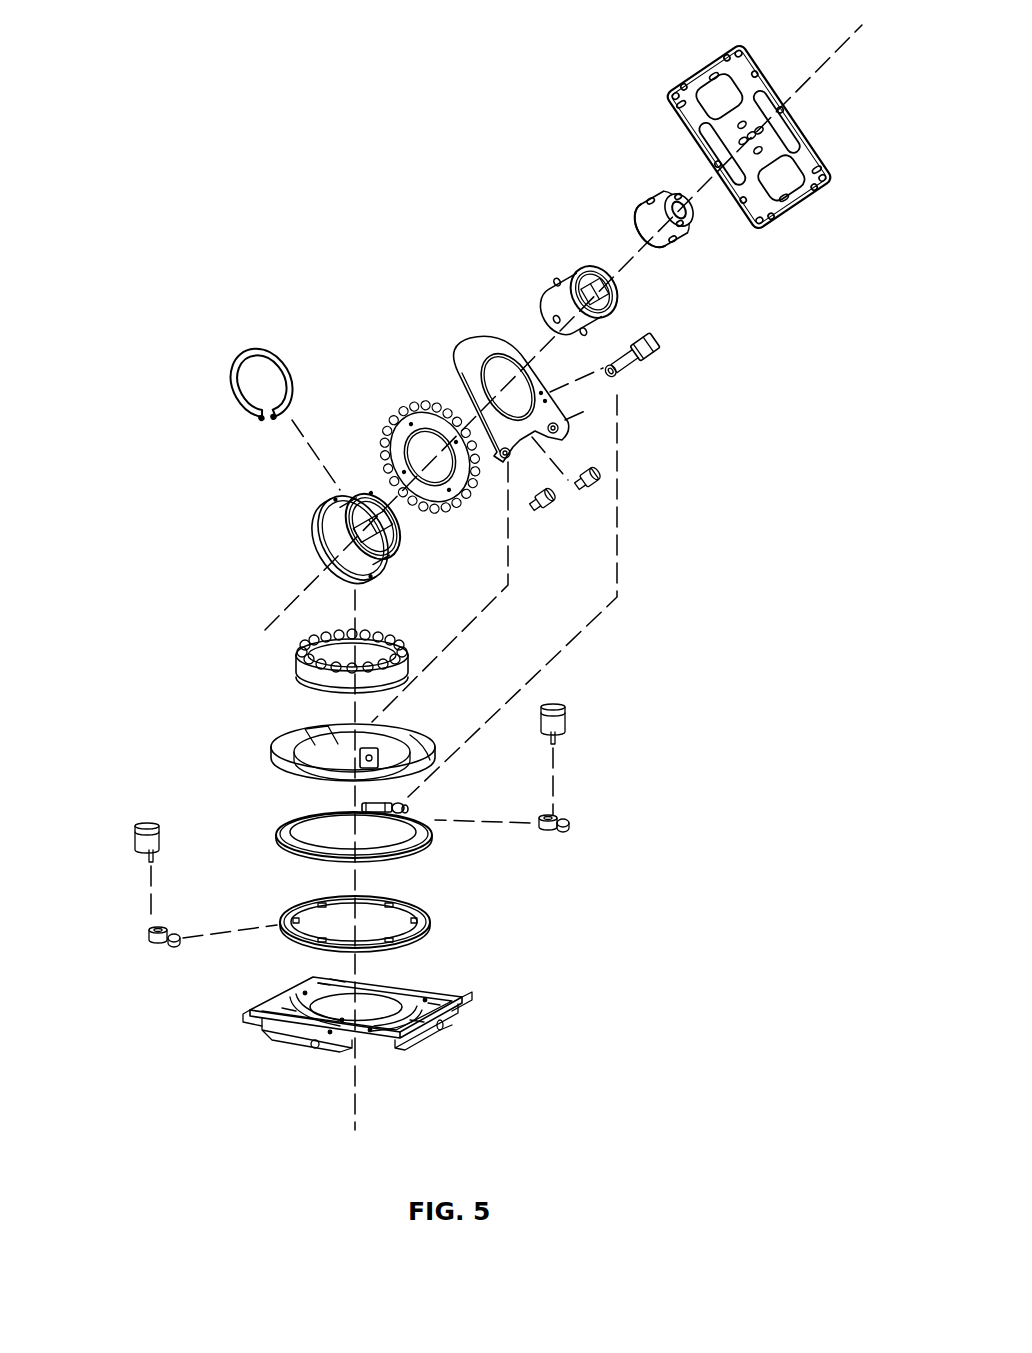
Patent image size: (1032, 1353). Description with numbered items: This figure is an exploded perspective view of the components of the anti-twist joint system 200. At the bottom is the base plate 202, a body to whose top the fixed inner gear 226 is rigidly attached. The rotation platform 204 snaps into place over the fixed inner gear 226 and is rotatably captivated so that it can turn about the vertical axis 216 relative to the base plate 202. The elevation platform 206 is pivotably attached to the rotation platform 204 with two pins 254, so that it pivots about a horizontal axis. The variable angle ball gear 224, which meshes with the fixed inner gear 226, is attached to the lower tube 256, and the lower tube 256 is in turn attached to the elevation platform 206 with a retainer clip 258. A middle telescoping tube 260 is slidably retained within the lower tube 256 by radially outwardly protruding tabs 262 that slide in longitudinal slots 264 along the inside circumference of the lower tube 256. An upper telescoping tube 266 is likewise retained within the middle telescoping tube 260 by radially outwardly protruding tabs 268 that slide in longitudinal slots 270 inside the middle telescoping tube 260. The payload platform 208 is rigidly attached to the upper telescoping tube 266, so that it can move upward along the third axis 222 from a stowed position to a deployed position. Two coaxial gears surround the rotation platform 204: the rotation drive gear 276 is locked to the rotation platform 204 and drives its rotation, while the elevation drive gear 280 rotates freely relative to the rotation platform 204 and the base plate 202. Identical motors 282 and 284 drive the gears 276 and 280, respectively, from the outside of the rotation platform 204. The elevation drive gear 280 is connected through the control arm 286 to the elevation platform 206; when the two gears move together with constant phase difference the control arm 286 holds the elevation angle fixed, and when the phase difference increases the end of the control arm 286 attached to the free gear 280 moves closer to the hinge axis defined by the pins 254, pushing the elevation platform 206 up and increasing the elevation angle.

The system 200 is at (225, 145).
The base plate 202 is at (470, 1003).
The rotation platform 204 is at (282, 745).
The elevation platform 206 is at (477, 345).
The payload platform 208 is at (662, 105).
The vertical axis 216 is at (355, 1080).
The third axis 222 is at (845, 45).
The variable angle ball gear 224 is at (402, 422).
The fixed inner gear 226 is at (297, 668).
The pins 254 is at (592, 490).
The lower tube 256 is at (322, 540).
The retainer clip 258 is at (245, 353).
The middle telescoping tube 260 is at (572, 276).
The radially outwardly protruding tabs 262 is at (562, 290).
The longitudinal slots 264 is at (387, 523).
The upper telescoping tube 266 is at (657, 200).
The radially outwardly protruding tabs 268 is at (677, 250).
The longitudinal slots 270 is at (620, 303).
The rotation drive gear 276 is at (425, 913).
The elevation drive gear 280 is at (288, 837).
The motor 282 is at (138, 843).
The motor 284 is at (573, 723).
The control arm 286 is at (633, 365).